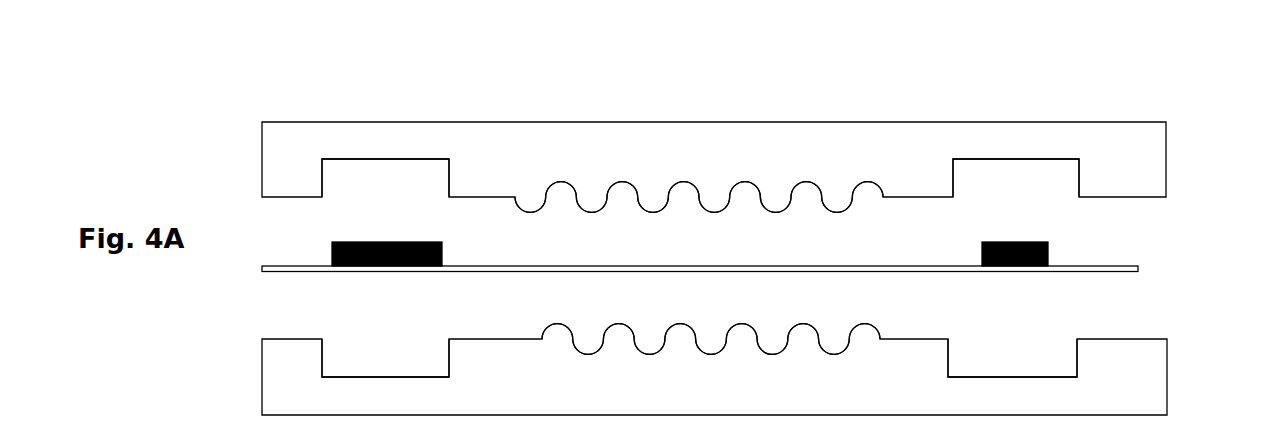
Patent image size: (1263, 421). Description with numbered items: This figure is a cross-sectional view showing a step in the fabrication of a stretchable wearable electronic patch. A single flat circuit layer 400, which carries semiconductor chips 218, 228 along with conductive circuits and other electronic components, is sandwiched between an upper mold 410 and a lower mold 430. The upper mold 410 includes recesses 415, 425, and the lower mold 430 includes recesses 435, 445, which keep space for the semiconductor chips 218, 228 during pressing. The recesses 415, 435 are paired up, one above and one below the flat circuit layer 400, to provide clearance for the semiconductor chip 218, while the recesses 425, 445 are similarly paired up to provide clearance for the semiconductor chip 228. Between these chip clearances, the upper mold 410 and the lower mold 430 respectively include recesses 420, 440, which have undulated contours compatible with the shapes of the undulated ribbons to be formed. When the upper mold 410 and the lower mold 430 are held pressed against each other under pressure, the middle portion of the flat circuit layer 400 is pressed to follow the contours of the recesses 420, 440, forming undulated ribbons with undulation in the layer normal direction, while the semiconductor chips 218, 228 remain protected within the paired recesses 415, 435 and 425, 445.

The upper mold 410 is at (1153, 165).
The lower mold 430 is at (1153, 382).
The flat circuit layer 400 is at (1110, 265).
The semiconductor chip 218 is at (390, 241).
The semiconductor chip 228 is at (1005, 241).
The recess 415 is at (387, 175).
The recess 425 is at (1027, 177).
The recess 420 is at (690, 186).
The recess 440 is at (776, 343).
The recess 435 is at (405, 370).
The recess 445 is at (1031, 370).